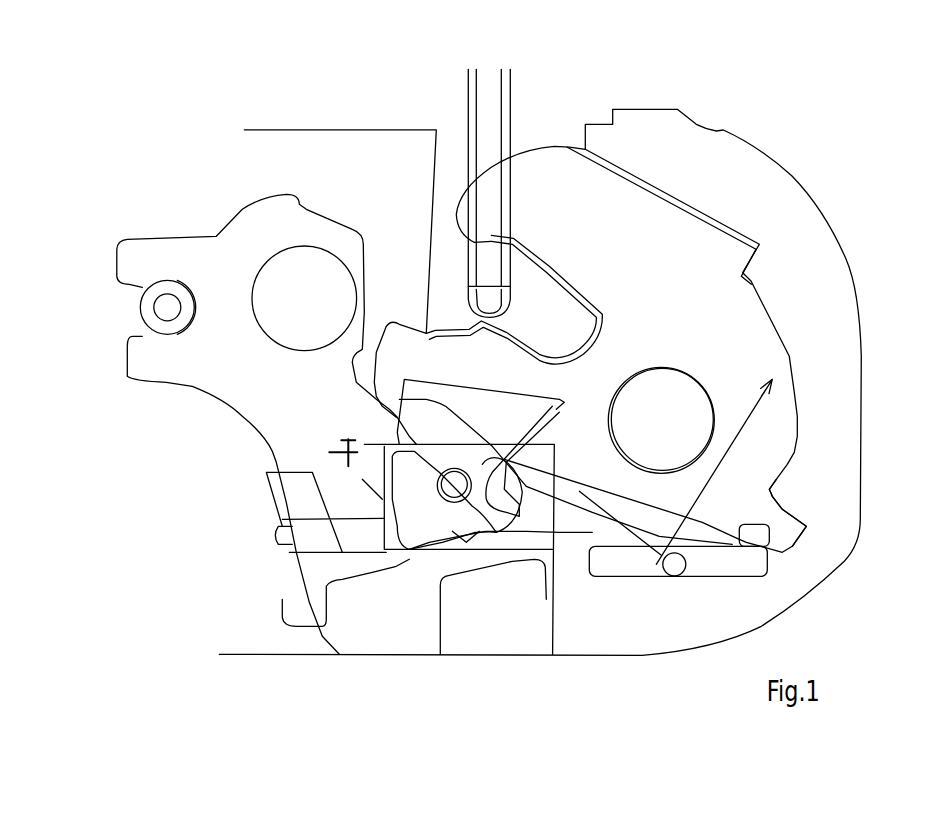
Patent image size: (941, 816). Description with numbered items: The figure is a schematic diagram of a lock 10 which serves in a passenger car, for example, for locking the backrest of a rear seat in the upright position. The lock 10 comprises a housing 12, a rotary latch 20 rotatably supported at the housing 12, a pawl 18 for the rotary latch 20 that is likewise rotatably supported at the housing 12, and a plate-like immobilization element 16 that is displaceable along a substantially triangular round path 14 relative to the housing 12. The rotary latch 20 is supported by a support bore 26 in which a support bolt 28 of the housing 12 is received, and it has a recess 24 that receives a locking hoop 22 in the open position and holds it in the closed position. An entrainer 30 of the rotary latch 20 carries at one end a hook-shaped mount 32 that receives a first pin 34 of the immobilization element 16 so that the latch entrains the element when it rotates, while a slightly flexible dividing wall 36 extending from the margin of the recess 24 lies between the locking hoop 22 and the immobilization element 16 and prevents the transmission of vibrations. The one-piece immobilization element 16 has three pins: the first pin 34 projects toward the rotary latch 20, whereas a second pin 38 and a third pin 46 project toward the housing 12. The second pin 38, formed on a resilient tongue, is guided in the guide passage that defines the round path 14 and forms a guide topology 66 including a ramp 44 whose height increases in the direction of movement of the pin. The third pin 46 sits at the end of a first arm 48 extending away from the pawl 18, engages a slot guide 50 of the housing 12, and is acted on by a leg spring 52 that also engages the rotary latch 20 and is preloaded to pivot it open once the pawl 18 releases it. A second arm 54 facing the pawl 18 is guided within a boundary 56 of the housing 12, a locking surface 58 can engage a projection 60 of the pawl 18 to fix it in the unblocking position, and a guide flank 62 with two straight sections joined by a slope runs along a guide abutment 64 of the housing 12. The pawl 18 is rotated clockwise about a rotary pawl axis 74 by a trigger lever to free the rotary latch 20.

The lock 10 is at (815, 157).
The housing 12 is at (847, 312).
The round path 14 is at (407, 542).
The immobilization element 16 is at (592, 530).
The pawl 18 is at (272, 402).
The rotary latch 20 is at (641, 286).
The locking hoop 22 is at (497, 90).
The recess 24 is at (545, 305).
The support bore 26 is at (695, 472).
The support bolt 28 is at (645, 437).
The entrainer 30 is at (545, 418).
The hook-shaped mount 32 is at (481, 525).
The first pin 34 is at (499, 428).
The dividing wall 36 is at (517, 343).
The second pin 38 is at (455, 486).
The ramp 44 is at (550, 403).
The third pin 46 is at (676, 577).
The first arm 48 is at (618, 535).
The slot guide 50 is at (753, 568).
The leg spring 52 is at (730, 418).
The second arm 54 is at (275, 536).
The boundary 56 is at (277, 478).
The locking surface 58 is at (363, 480).
The projection 60 is at (337, 463).
The guide flank 62 is at (533, 532).
The guide abutment 64 is at (513, 562).
The guide topology 66 is at (431, 560).
The rotary pawl axis 74 is at (300, 300).